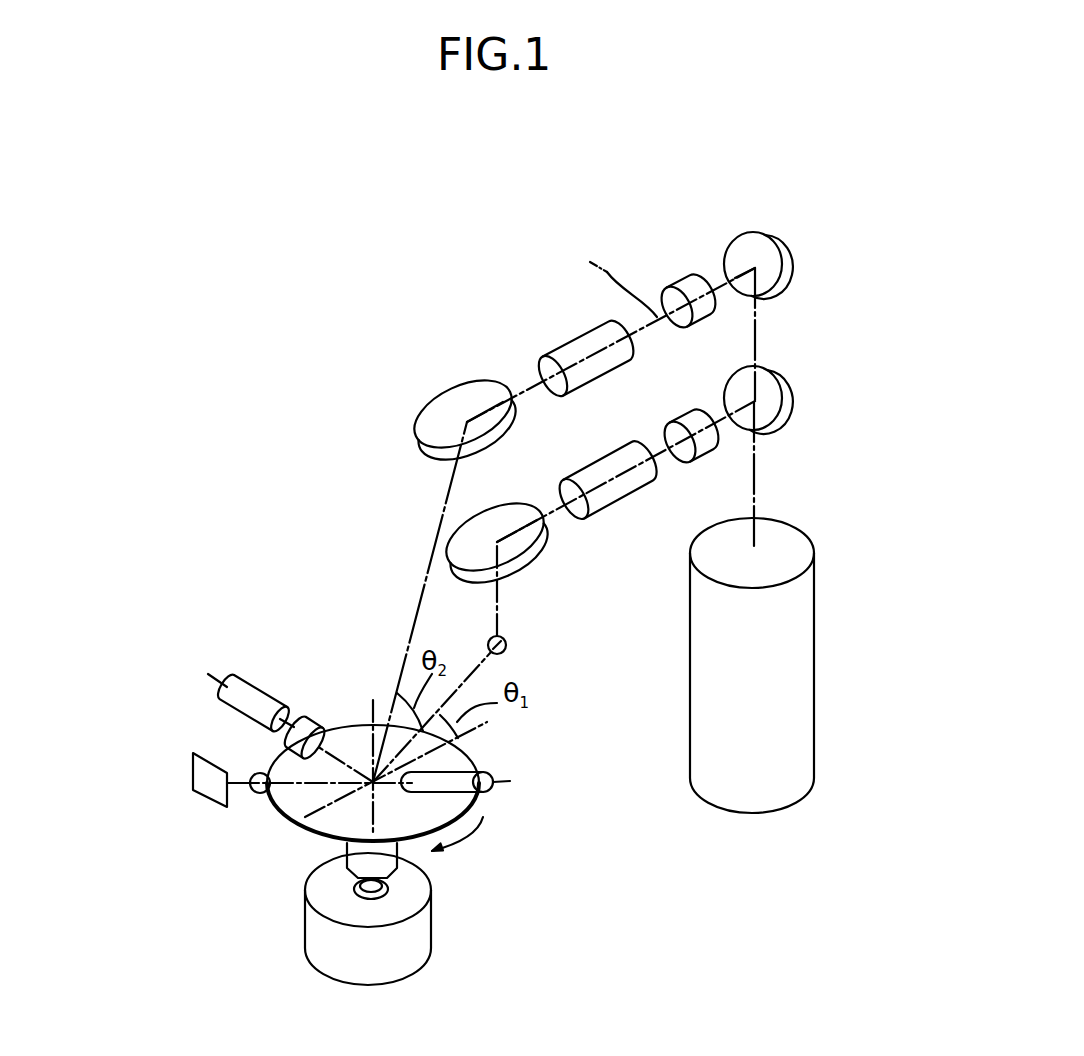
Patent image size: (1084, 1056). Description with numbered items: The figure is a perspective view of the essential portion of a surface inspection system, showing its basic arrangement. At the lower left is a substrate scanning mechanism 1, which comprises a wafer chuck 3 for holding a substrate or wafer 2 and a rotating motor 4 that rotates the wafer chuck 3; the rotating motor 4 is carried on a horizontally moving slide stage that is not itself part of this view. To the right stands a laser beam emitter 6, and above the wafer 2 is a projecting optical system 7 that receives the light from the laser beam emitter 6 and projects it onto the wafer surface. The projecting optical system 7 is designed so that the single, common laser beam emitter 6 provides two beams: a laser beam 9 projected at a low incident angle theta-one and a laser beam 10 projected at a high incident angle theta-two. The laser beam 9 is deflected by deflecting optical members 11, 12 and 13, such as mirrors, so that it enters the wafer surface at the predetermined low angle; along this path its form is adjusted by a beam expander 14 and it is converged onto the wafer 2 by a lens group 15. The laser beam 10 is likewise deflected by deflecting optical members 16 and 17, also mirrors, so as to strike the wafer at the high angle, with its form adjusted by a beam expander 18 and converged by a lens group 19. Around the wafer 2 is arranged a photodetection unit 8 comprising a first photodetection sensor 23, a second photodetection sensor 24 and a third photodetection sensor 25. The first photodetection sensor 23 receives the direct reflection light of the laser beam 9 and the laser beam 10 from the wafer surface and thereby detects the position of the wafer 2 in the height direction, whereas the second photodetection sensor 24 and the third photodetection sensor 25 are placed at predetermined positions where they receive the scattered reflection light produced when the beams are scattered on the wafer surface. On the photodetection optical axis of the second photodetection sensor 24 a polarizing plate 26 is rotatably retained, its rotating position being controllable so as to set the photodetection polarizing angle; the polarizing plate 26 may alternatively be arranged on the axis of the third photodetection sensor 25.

The substrate scanning mechanism 1 is at (468, 878).
The substrate (wafer) 2 is at (297, 802).
The wafer chuck 3 is at (352, 848).
The rotating motor 4 is at (428, 952).
The laser beam emitter 6 is at (820, 627).
The projecting optical system 7 is at (720, 210).
The photodetection unit 8 is at (217, 811).
The laser beam 9 is at (665, 453).
The laser beam 10 is at (601, 281).
The deflecting optical member 11 is at (793, 408).
The deflecting optical member 12 is at (463, 513).
The deflecting optical member 13 is at (508, 643).
The beam expander 14 is at (687, 413).
The lens group 15 is at (594, 462).
The deflecting optical member 16 is at (778, 243).
The deflecting optical member 17 is at (441, 390).
The beam expander 18 is at (687, 280).
The lens group 19 is at (568, 338).
The first photodetection sensor 23 is at (203, 752).
The second photodetection sensor 24 is at (250, 684).
The third photodetection sensor 25 is at (510, 781).
The polarizing plate 26 is at (312, 720).